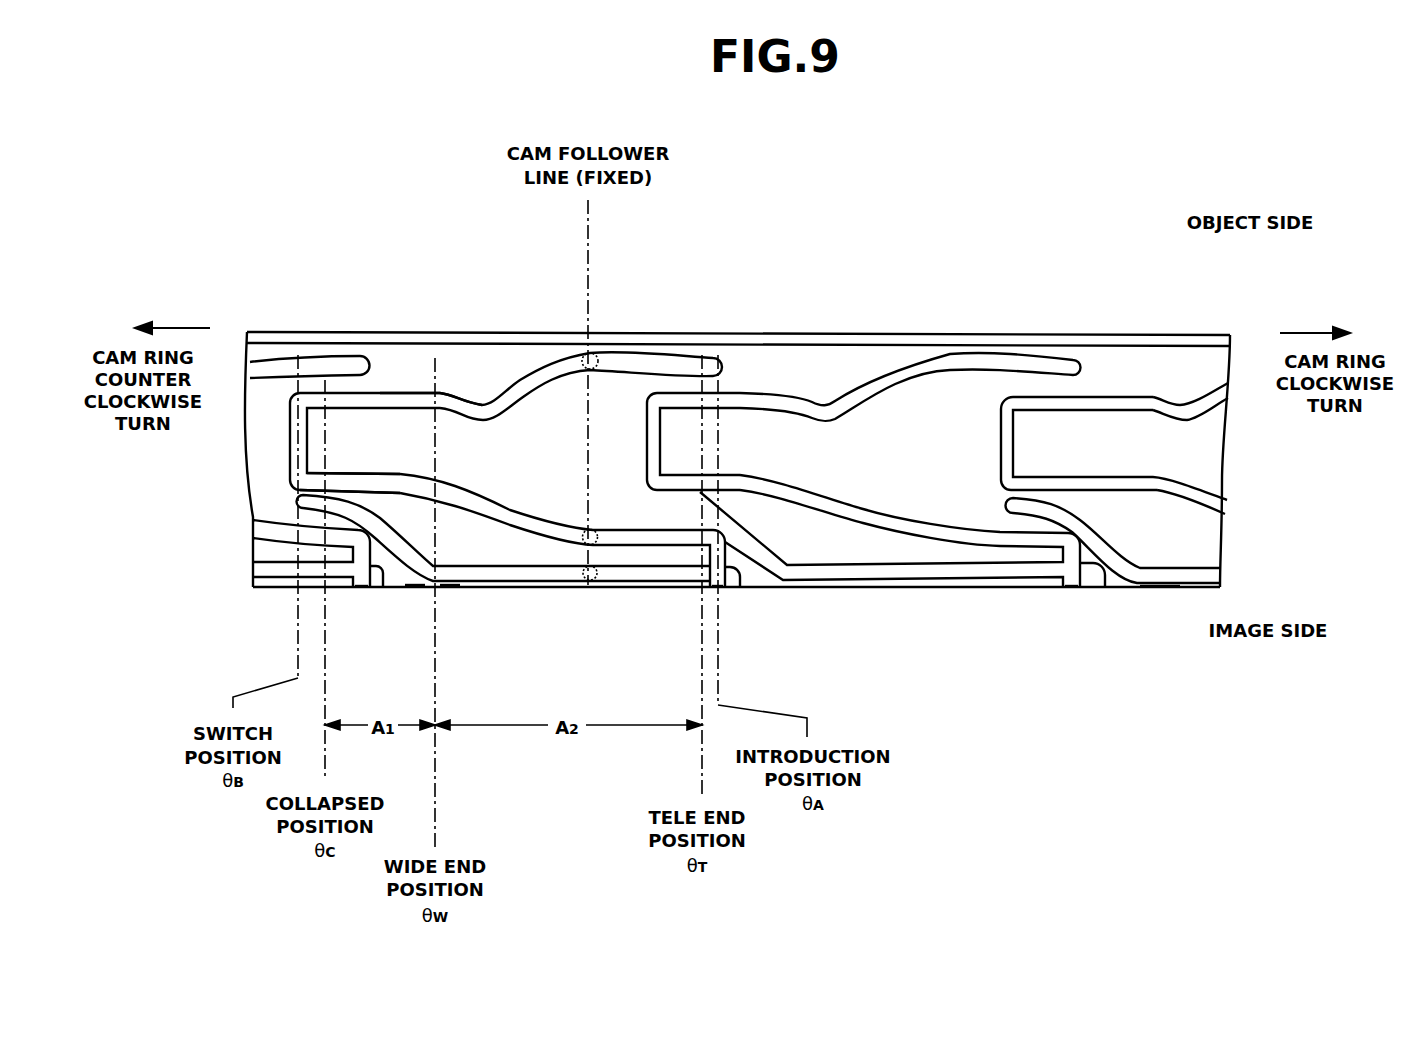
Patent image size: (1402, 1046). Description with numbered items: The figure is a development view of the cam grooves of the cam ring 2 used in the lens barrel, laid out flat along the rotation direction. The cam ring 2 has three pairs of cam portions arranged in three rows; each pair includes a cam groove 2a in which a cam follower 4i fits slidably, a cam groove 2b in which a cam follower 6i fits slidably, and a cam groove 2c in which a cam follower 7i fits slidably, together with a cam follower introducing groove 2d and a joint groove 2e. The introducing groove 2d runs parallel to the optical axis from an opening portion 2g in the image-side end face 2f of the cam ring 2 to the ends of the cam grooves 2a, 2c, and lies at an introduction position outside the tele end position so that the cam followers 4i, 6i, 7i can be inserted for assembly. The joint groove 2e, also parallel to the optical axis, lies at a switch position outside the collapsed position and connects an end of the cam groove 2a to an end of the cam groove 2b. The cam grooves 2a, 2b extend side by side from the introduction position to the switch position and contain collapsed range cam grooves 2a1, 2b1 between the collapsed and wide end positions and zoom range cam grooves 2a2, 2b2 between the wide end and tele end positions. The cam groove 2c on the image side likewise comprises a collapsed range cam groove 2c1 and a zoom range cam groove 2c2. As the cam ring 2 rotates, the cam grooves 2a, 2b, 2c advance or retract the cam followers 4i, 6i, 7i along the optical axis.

The cam ring 2 is at (881, 332).
The cam groove 2a is at (267, 360).
The collapsed range cam groove 2a1 is at (388, 385).
The zoom range cam groove 2a2 is at (490, 395).
The cam groove 2b is at (273, 520).
The collapsed range cam groove 2b1 is at (387, 487).
The zoom range cam groove 2b2 is at (507, 510).
The cam groove 2c is at (272, 568).
The collapsed range cam groove 2c1 is at (412, 582).
The zoom range cam groove 2c2 is at (450, 582).
The cam follower introducing groove 2d is at (380, 582).
The joint groove 2e is at (288, 425).
The end face 2f is at (1163, 588).
The opening portion 2g is at (363, 582).
The cam follower 4i is at (598, 357).
The cam follower 6i is at (597, 535).
The cam follower 7i is at (596, 570).